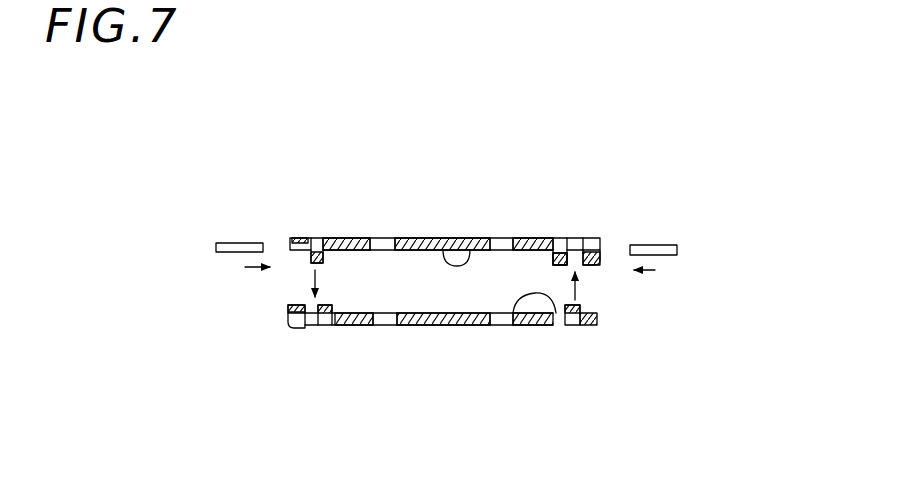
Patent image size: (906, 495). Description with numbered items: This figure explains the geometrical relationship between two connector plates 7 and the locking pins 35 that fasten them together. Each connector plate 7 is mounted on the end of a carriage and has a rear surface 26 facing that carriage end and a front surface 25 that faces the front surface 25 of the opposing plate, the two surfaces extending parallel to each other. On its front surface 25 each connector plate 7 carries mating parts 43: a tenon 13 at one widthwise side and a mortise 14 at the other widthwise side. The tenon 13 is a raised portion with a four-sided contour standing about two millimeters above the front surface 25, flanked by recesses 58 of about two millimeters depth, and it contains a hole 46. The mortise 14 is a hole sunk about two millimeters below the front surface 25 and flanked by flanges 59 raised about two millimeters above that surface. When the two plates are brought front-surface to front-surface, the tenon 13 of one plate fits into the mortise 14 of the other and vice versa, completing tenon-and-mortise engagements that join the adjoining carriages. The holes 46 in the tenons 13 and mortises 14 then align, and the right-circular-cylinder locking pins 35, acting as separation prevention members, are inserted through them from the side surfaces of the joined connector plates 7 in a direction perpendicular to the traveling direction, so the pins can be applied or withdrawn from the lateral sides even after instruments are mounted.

The connector plate 7 is at (458, 236).
The tenon 13 is at (314, 236).
The mortise 14 is at (580, 236).
The front surface 25 is at (480, 236).
The rear surface 26 is at (421, 236).
The locking pin 35 is at (232, 242).
The mating part 43 is at (299, 278).
The hole 46 is at (603, 236).
The recess 58 is at (275, 238).
The flange 59 is at (560, 236).